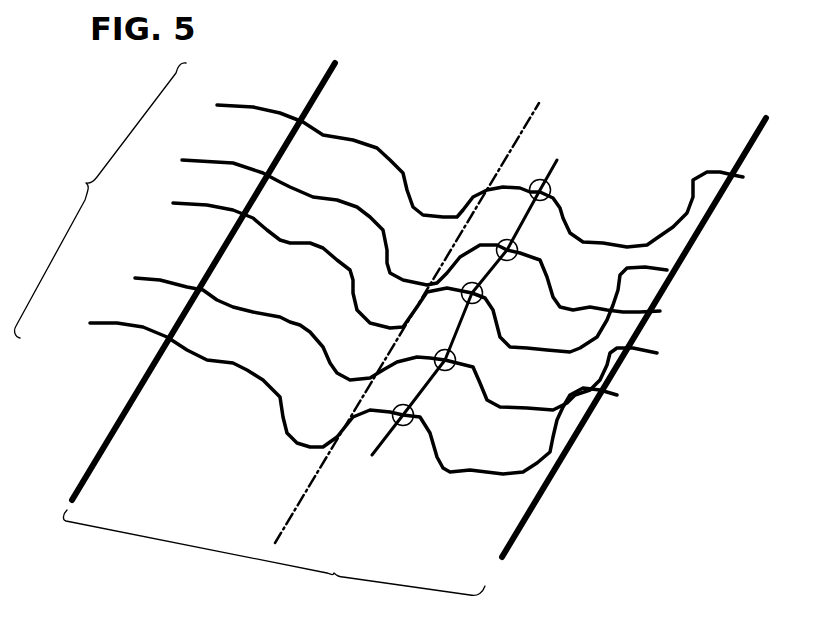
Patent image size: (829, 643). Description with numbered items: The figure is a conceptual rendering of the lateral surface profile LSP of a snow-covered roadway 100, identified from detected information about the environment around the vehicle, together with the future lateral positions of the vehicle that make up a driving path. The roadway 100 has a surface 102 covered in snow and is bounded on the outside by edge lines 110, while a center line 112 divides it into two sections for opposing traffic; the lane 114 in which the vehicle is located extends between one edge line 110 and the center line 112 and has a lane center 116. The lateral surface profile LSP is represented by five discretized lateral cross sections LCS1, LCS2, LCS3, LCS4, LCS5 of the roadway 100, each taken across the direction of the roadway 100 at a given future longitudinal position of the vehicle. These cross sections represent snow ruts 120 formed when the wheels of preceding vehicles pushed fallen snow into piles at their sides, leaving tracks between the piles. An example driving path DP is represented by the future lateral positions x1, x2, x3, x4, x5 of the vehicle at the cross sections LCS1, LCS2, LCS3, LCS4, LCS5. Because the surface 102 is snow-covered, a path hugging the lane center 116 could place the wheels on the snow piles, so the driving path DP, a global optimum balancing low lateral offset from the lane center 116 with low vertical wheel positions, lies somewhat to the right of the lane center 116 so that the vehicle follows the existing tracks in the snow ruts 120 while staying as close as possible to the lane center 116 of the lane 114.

The roadway 100 is at (378, 126).
The surface 102 is at (451, 534).
The edge lines 110 is at (527, 518).
The center line 112 is at (100, 462).
The lane 114 is at (274, 556).
The lane center 116 is at (305, 495).
The snow ruts 120 is at (455, 172).
The lateral surface profile LSP is at (100, 200).
The driving path DP is at (554, 160).
The discretized lateral cross section LCS1 is at (328, 395).
The discretized lateral cross section LCS2 is at (372, 342).
The discretized lateral cross section LCS3 is at (396, 274).
The discretized lateral cross section LCS4 is at (396, 231).
The discretized lateral cross section LCS5 is at (650, 183).
The future lateral position x1 is at (403, 432).
The future lateral position x2 is at (447, 378).
The future lateral position x3 is at (475, 312).
The future lateral position x4 is at (508, 268).
The future lateral position x5 is at (542, 208).